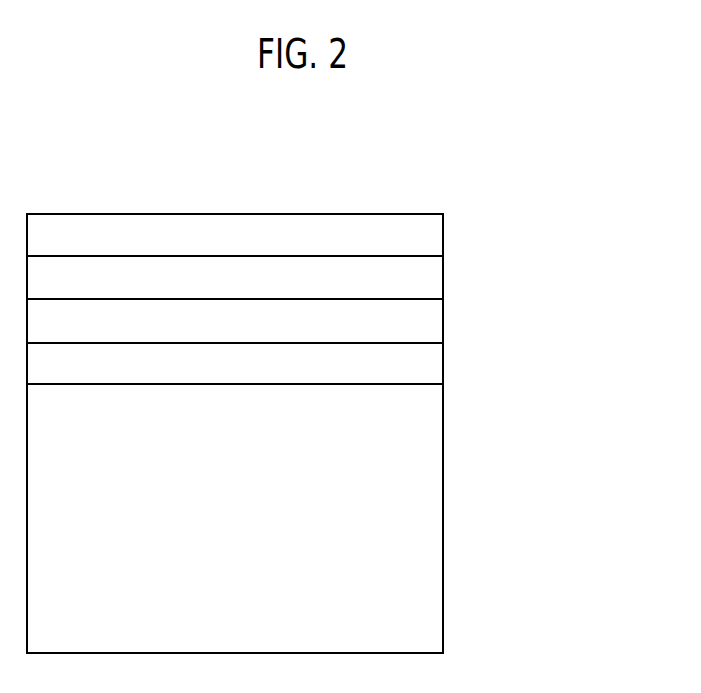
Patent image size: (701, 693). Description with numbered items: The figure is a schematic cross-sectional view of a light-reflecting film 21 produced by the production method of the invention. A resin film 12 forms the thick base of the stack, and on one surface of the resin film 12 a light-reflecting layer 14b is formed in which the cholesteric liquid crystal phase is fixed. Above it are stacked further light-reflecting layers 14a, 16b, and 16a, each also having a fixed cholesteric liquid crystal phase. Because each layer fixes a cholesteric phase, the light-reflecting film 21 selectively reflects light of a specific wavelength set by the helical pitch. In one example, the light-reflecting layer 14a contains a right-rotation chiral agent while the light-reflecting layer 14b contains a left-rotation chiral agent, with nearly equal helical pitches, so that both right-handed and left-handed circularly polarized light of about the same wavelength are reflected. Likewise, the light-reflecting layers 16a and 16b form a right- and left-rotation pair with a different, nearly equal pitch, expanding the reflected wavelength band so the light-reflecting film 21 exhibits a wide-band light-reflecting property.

The light-reflecting layer 16a is at (444, 236).
The light-reflecting layer 16b is at (444, 278).
The light-reflecting layer 14a is at (444, 320).
The light-reflecting layer 14b is at (444, 362).
The resin film 12 is at (444, 437).
The light-reflecting film 21 is at (604, 213).